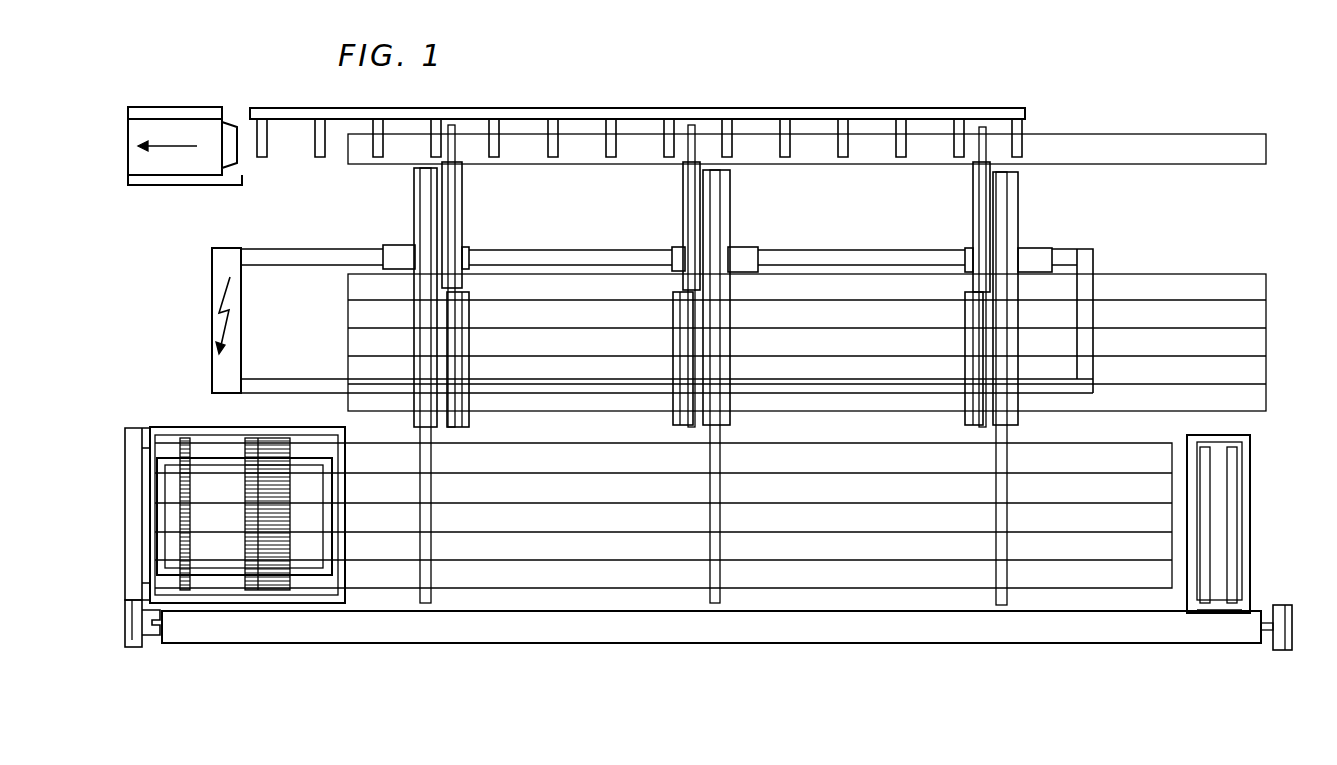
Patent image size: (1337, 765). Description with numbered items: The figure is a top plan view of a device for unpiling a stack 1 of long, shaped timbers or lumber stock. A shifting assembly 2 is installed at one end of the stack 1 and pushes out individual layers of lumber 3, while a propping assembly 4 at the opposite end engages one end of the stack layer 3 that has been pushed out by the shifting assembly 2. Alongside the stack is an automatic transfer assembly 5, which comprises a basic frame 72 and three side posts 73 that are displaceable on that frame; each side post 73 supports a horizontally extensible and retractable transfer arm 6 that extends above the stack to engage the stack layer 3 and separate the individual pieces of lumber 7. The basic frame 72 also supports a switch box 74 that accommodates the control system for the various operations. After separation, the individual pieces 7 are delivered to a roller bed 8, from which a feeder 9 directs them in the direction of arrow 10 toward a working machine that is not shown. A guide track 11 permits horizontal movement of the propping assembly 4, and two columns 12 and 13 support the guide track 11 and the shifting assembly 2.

The stack 1 is at (547, 493).
The shifting assembly 2 is at (195, 420).
The layer of lumber 3 is at (1182, 270).
The propping assembly 4 is at (1185, 435).
The automatic transfer assembly 5 is at (581, 246).
The transfer arm 6 is at (1004, 606).
The individual piece of lumber 7 is at (1188, 156).
The roller bed 8 is at (717, 106).
The feeder 9 is at (170, 190).
The arrow 10 is at (197, 146).
The guide track 11 is at (639, 648).
The column 12 is at (135, 650).
The column 13 is at (1284, 650).
The basic frame 72 is at (513, 262).
The side post 73 is at (412, 232).
The switch box 74 is at (217, 297).